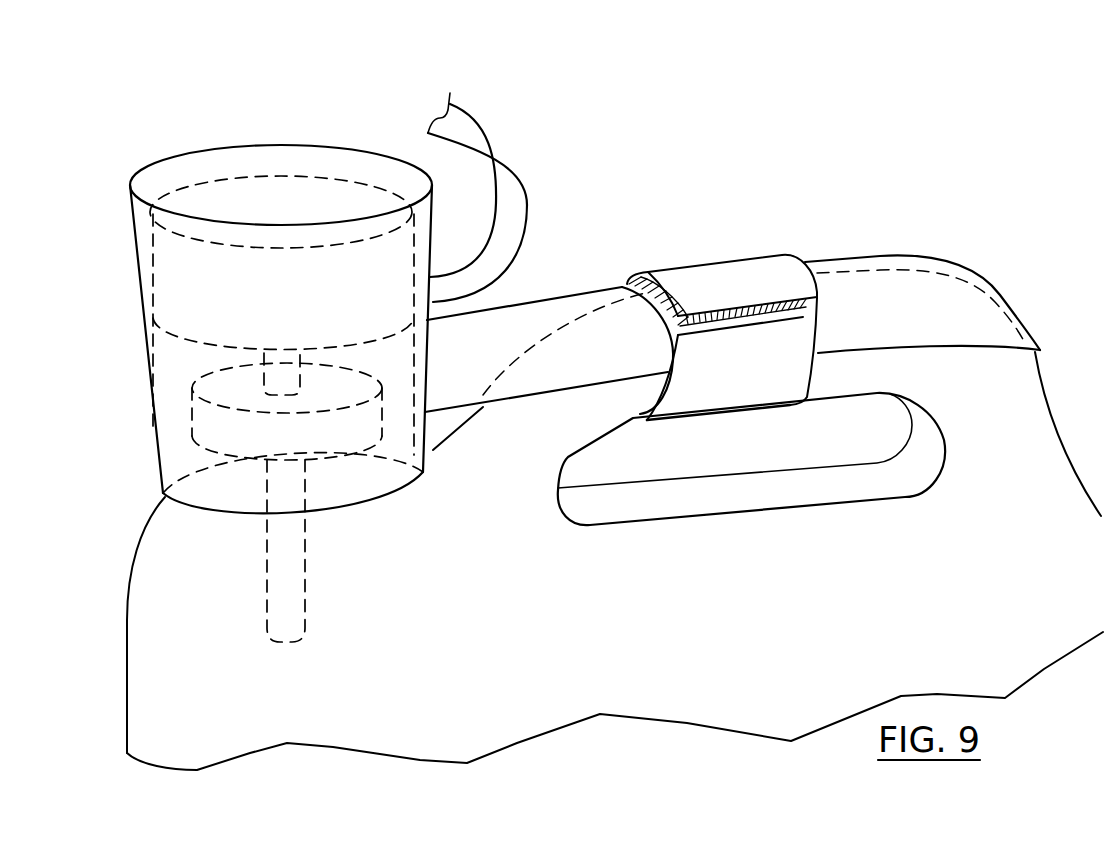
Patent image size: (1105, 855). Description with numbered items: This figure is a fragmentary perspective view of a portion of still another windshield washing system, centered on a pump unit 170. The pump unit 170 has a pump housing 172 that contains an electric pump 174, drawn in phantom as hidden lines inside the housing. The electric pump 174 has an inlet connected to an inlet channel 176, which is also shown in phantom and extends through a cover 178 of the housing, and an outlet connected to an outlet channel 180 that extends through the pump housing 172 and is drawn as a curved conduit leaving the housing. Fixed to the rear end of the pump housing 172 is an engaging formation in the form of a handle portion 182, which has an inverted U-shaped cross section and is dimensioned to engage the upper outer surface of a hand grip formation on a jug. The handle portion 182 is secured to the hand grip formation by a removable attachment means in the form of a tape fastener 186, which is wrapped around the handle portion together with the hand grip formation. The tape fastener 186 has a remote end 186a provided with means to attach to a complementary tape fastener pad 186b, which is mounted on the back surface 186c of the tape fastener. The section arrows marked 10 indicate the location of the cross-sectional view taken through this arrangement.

The pump unit 170 is at (748, 202).
The pump housing 172 is at (237, 140).
The electric pump 174 is at (148, 303).
The inlet channel 176 is at (292, 607).
The cover 178 is at (203, 422).
The outlet channel 180 is at (502, 162).
The handle portion 182 is at (928, 252).
The tape fastener 186 is at (729, 330).
The remote end 186a is at (780, 290).
The tape fastener pad 186b is at (773, 322).
The back surface 186c is at (748, 390).
The section line 10- 10 is at (875, 223).